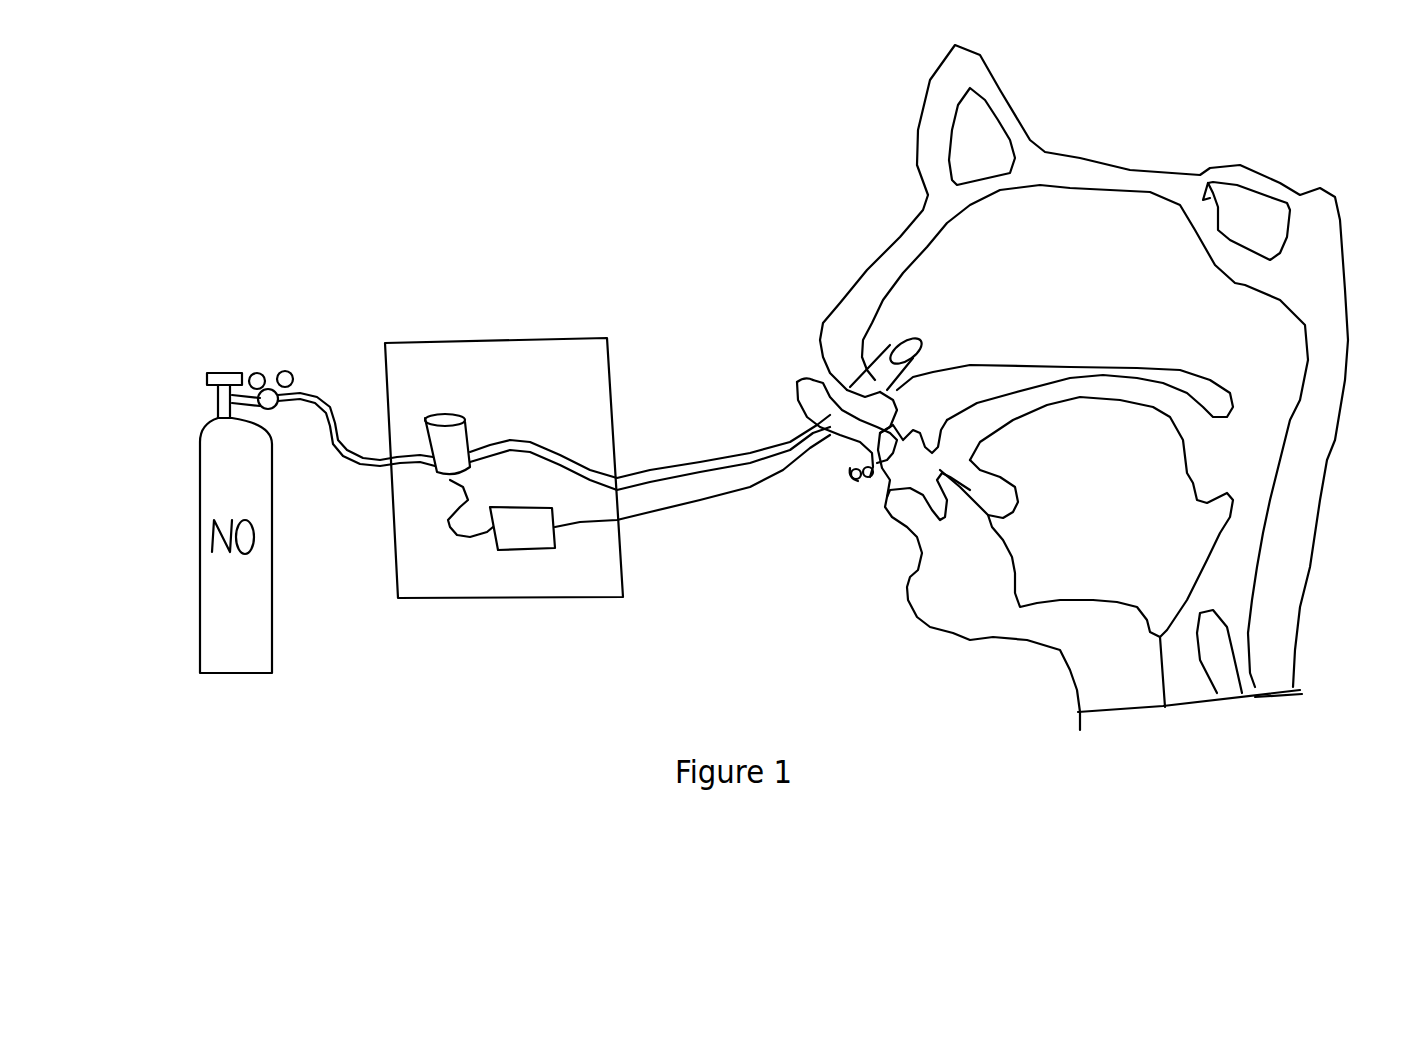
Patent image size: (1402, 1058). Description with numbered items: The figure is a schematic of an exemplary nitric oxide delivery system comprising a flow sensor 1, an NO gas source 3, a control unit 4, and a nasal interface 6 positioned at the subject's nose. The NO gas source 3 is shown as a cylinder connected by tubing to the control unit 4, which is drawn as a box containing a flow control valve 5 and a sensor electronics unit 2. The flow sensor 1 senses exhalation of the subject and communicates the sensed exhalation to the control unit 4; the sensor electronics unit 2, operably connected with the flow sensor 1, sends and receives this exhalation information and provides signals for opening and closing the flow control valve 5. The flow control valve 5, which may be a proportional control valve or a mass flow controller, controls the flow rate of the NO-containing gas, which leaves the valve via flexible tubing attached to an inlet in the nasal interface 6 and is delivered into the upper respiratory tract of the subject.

The flow sensor 1 is at (863, 477).
The sensor electronics unit 2 is at (520, 548).
The NO gas source 3 is at (200, 633).
The control unit 4 is at (597, 412).
The flow control valve 5 is at (452, 428).
The nasal interface 6 is at (847, 347).